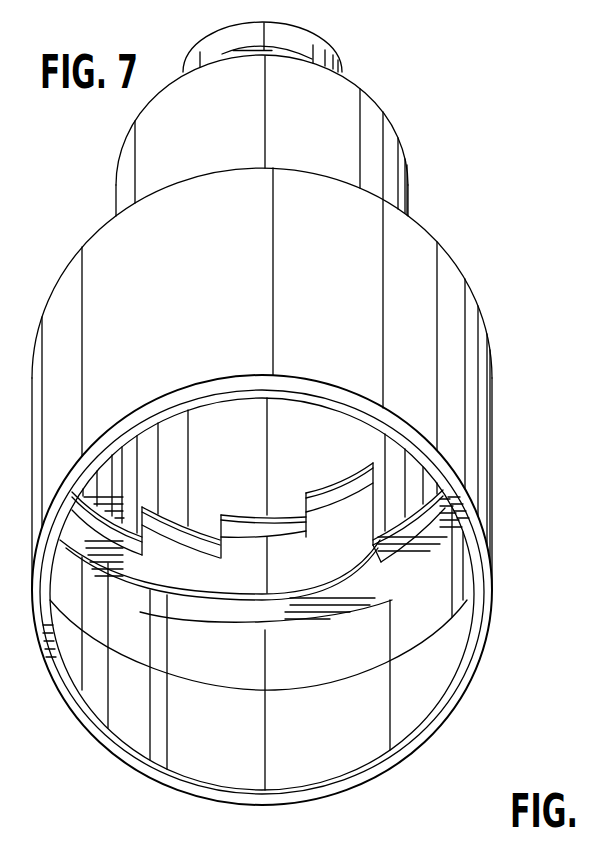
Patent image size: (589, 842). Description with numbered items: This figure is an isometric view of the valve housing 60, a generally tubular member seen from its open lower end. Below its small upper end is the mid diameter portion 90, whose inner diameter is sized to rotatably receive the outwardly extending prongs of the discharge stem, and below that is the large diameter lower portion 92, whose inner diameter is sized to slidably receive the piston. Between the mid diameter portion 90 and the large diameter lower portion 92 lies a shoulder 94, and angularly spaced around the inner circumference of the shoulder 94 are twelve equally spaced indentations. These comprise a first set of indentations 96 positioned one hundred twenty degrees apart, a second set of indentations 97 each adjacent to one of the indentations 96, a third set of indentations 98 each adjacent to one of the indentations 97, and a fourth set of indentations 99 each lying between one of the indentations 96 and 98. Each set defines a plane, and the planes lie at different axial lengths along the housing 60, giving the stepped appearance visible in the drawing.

The valve housing 60 is at (502, 432).
The mid diameter portion 90 is at (408, 205).
The large diameter lower portion 92 is at (492, 390).
The shoulder 94 is at (422, 555).
The first set of indentations 96 is at (437, 716).
The second set of indentations 97 is at (347, 488).
The third set of indentations 98 is at (272, 530).
The fourth set of indentations 99 is at (183, 540).